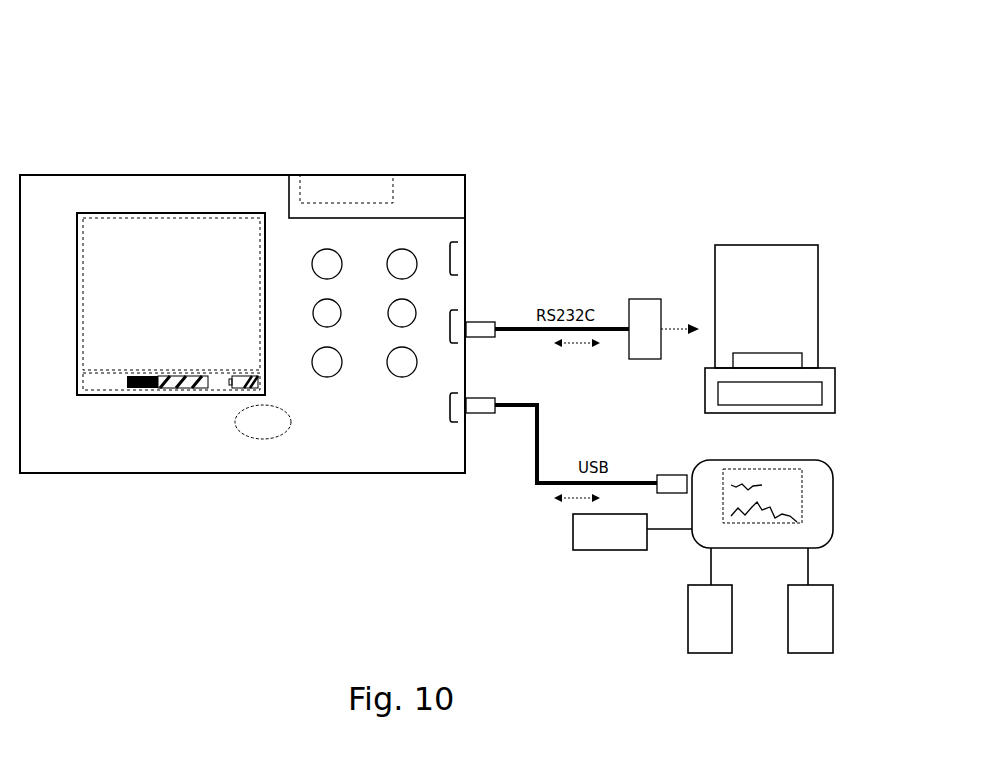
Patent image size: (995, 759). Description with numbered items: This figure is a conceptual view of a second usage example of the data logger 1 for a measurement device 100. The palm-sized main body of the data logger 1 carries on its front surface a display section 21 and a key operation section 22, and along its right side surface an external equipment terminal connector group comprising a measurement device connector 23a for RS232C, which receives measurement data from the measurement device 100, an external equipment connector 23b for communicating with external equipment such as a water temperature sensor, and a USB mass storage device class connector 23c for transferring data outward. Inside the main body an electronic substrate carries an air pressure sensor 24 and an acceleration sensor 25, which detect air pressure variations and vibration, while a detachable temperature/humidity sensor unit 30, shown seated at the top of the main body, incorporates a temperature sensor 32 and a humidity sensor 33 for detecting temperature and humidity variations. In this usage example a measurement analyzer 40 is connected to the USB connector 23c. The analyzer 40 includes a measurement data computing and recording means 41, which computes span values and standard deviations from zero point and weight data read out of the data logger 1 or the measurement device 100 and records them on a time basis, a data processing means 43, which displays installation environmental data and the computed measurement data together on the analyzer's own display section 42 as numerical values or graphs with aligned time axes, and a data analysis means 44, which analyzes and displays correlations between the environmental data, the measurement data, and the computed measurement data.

The data logger 1 is at (82, 112).
The display section 21 is at (162, 238).
The key operation section 22 is at (417, 384).
The measurement device connector 23a is at (462, 320).
The external equipment connector 23b is at (458, 257).
The USB mass storage device class connector 23c is at (462, 402).
The air pressure sensor 24 is at (263, 458).
The acceleration sensor 25 is at (261, 439).
The temperature/humidity sensor unit 30 is at (431, 185).
The temperature sensor 32 is at (346, 162).
The humidity sensor 33 is at (342, 192).
The measurement analyzer 40 is at (787, 531).
The measurement data computing and recording means 41 is at (608, 541).
The display section 42 is at (757, 515).
The data processing means 43 is at (711, 632).
The data analysis means 44 is at (810, 632).
The measurement device 100 is at (806, 308).